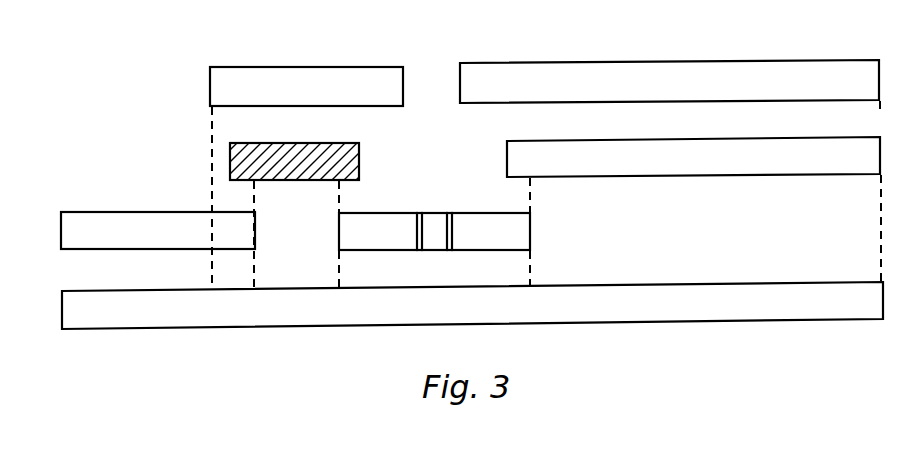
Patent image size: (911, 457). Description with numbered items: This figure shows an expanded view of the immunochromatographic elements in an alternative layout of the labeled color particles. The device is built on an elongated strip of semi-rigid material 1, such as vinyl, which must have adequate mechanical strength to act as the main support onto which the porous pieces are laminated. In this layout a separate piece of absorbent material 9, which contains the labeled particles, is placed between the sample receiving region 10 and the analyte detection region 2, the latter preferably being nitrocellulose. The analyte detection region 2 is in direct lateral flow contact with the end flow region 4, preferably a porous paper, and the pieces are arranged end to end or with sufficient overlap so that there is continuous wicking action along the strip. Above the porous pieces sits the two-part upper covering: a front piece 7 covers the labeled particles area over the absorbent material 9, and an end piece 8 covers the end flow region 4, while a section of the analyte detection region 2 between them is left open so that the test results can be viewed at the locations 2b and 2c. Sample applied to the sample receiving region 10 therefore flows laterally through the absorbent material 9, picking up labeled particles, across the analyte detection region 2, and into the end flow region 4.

The semi-rigid material 1 is at (777, 292).
The analyte detection region 2 is at (533, 236).
The test result viewing location 2b is at (419, 213).
The test result viewing location 2c is at (450, 213).
The end flow region 4 is at (713, 162).
The front piece 7 is at (289, 78).
The end piece 8 is at (640, 75).
The absorbent material 9 is at (300, 172).
The sample receiving region 10 is at (131, 222).